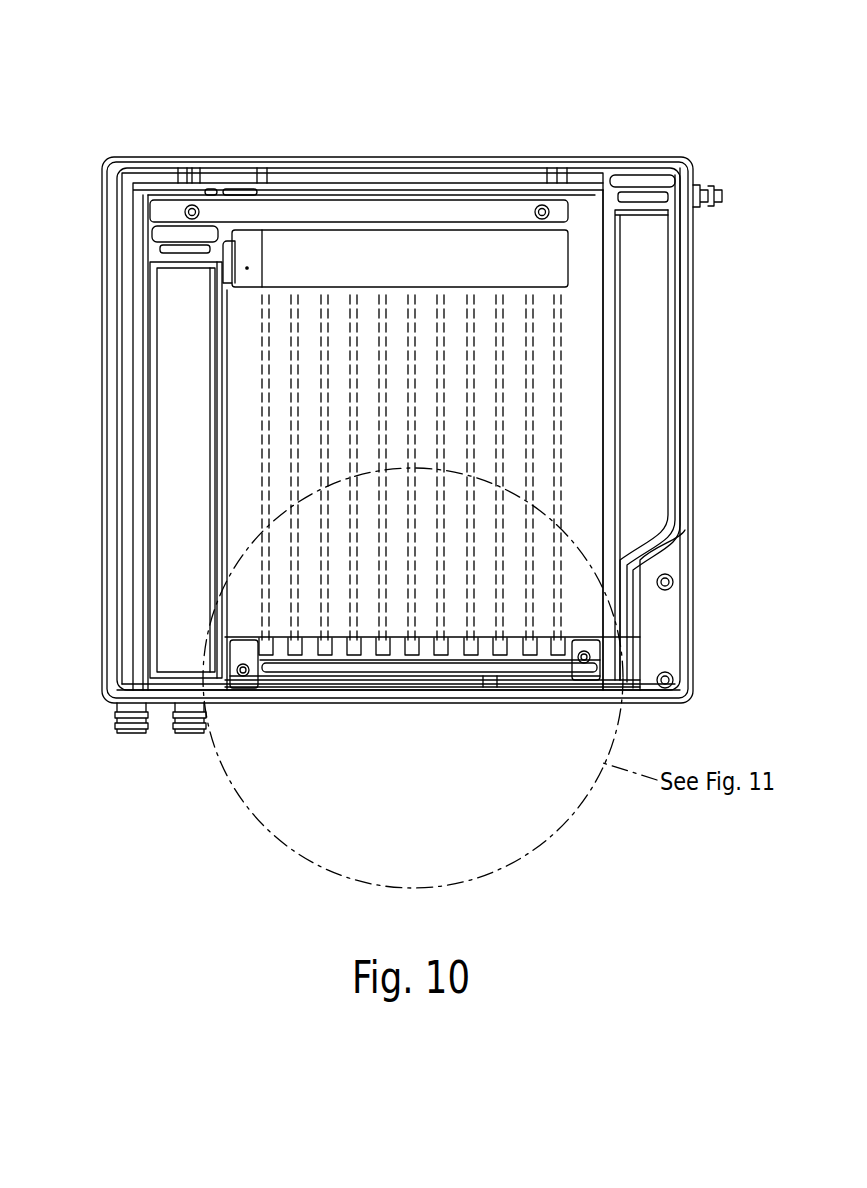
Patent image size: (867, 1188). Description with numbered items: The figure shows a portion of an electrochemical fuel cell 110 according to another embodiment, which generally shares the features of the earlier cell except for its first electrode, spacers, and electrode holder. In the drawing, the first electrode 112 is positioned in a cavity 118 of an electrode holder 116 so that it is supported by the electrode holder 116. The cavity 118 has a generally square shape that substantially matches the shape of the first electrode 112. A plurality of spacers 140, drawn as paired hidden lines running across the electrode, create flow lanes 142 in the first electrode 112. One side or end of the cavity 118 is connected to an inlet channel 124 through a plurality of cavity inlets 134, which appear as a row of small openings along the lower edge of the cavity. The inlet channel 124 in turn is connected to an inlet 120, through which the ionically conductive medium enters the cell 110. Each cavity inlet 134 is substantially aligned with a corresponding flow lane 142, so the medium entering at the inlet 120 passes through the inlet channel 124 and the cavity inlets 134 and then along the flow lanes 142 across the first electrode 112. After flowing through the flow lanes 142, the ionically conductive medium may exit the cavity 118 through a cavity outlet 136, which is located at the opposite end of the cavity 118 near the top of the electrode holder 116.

The electrochemical fuel cell 110 is at (103, 115).
The first electrode 112 is at (583, 503).
The electrode holder 116 is at (645, 440).
The cavity 118 is at (222, 377).
The inlet 120 is at (125, 735).
The inlet channel 124 is at (420, 686).
The cavity inlets 134 is at (312, 660).
The cavity outlet 136 is at (414, 288).
The spacers 140 is at (521, 305).
The flow lanes 142 is at (545, 368).